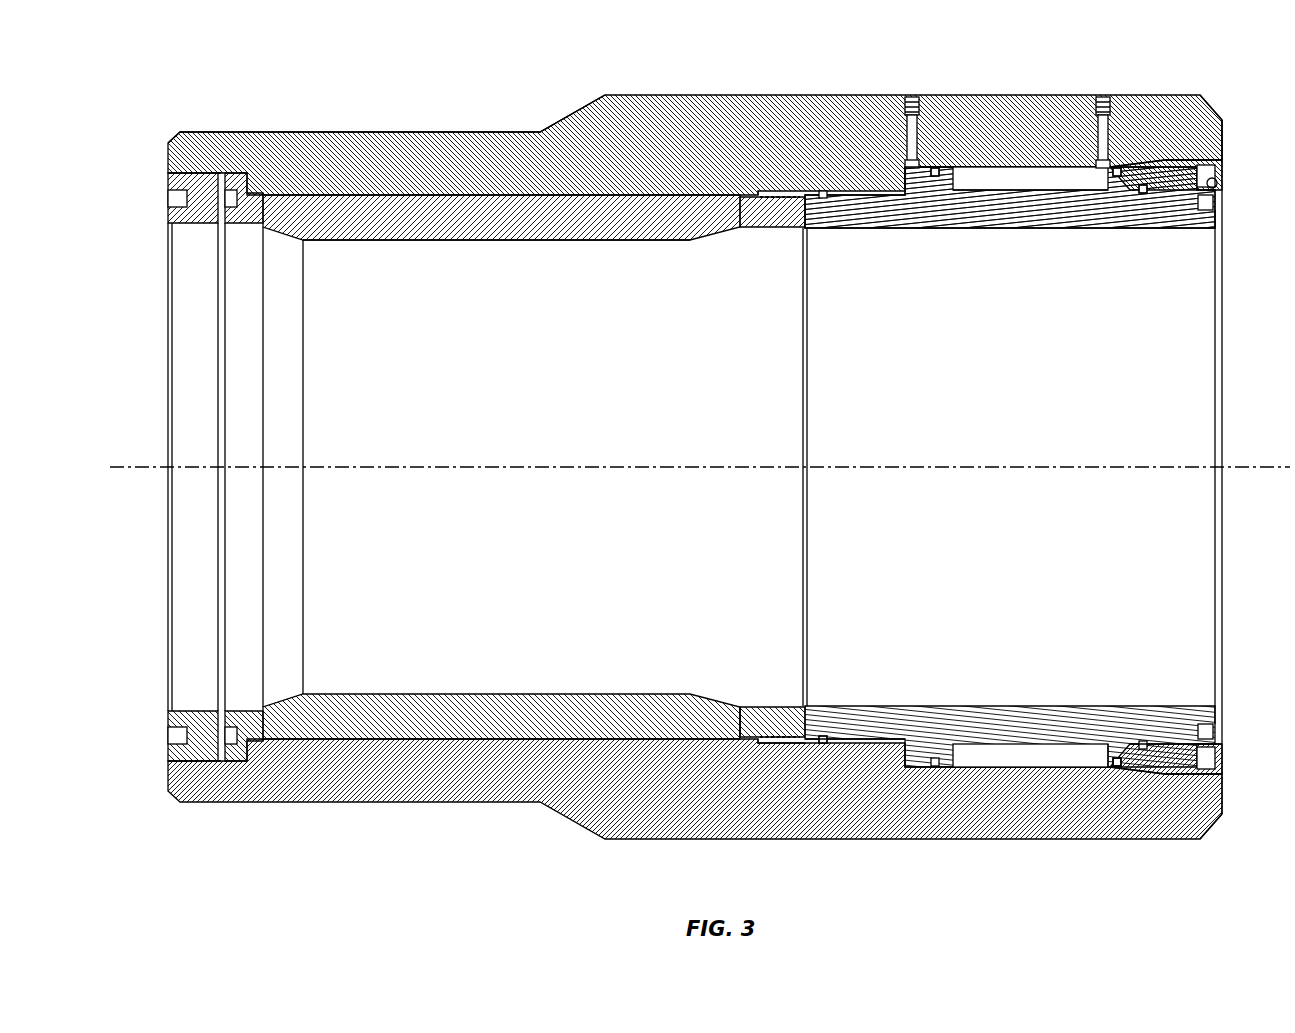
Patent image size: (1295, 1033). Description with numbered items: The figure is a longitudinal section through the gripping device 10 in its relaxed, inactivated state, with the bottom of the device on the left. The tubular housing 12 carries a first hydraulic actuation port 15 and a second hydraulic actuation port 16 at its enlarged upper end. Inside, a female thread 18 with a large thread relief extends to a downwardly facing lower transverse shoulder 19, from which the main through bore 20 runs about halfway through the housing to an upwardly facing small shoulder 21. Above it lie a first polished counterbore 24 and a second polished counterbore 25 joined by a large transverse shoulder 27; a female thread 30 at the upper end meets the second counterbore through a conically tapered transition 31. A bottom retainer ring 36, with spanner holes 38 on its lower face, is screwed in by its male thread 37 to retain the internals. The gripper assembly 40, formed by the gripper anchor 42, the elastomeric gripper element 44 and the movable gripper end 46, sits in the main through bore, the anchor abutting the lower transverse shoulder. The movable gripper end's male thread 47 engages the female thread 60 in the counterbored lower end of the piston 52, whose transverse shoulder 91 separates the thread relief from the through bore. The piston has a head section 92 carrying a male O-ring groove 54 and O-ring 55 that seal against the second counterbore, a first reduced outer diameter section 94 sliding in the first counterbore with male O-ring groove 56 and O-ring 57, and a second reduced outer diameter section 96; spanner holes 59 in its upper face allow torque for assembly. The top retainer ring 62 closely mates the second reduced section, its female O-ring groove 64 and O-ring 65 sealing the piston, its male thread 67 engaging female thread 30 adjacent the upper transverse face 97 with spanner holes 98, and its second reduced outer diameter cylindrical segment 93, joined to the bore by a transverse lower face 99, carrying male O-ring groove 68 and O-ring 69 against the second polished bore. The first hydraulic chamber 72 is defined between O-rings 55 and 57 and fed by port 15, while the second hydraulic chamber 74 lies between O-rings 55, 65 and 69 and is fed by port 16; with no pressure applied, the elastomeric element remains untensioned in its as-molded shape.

The gripping device 10 is at (318, 106).
The tubular housing 12 is at (458, 131).
The first hydraulic actuation port 15 is at (915, 128).
The second hydraulic actuation port 16 is at (1108, 97).
The female thread 18 is at (176, 776).
The lower transverse shoulder 19 is at (243, 172).
The main through bore 20 is at (398, 197).
The small shoulder 21 is at (762, 741).
The first polished counterbore 24 is at (862, 192).
The second polished counterbore 25 is at (992, 765).
The large transverse shoulder 27 is at (908, 766).
The female thread 30 is at (1218, 161).
The conically tapered transition 31 is at (1213, 205).
The bottom retainer ring 36 is at (208, 198).
The male thread 37 is at (180, 755).
The spanner holes 38 is at (172, 728).
The gripper assembly 40 is at (440, 680).
The gripper anchor 42 is at (238, 705).
The elastomeric gripper element 44 is at (392, 693).
The movable gripper end 46 is at (745, 711).
The male thread 47 is at (768, 190).
The piston 52 is at (1060, 218).
The male O-ring groove 54 is at (945, 176).
The O-ring 55 is at (935, 177).
The male O-ring groove 56 is at (830, 744).
The O-ring 57 is at (823, 743).
The spanner holes 59 is at (1218, 729).
The female thread 60 is at (802, 232).
The top retainer ring 62 is at (1212, 814).
The female O-ring groove 64 is at (1147, 192).
The O-ring 65 is at (1143, 196).
The male thread 67 is at (1193, 150).
The male O-ring groove 68 is at (1122, 768).
The O-ring 69 is at (1117, 768).
The first hydraulic chamber 72 is at (908, 168).
The second hydraulic chamber 74 is at (1040, 752).
The transverse shoulder 91 is at (800, 707).
The head section 92 is at (938, 168).
The second reduced outer diameter cylindrical segment 93 is at (1120, 765).
The first reduced outer diameter section 94 is at (843, 188).
The second reduced outer diameter section 96 is at (1047, 190).
The upper transverse face 97 is at (1218, 780).
The spanner holes 98 is at (1216, 183).
The transverse lower face 99 is at (1108, 752).